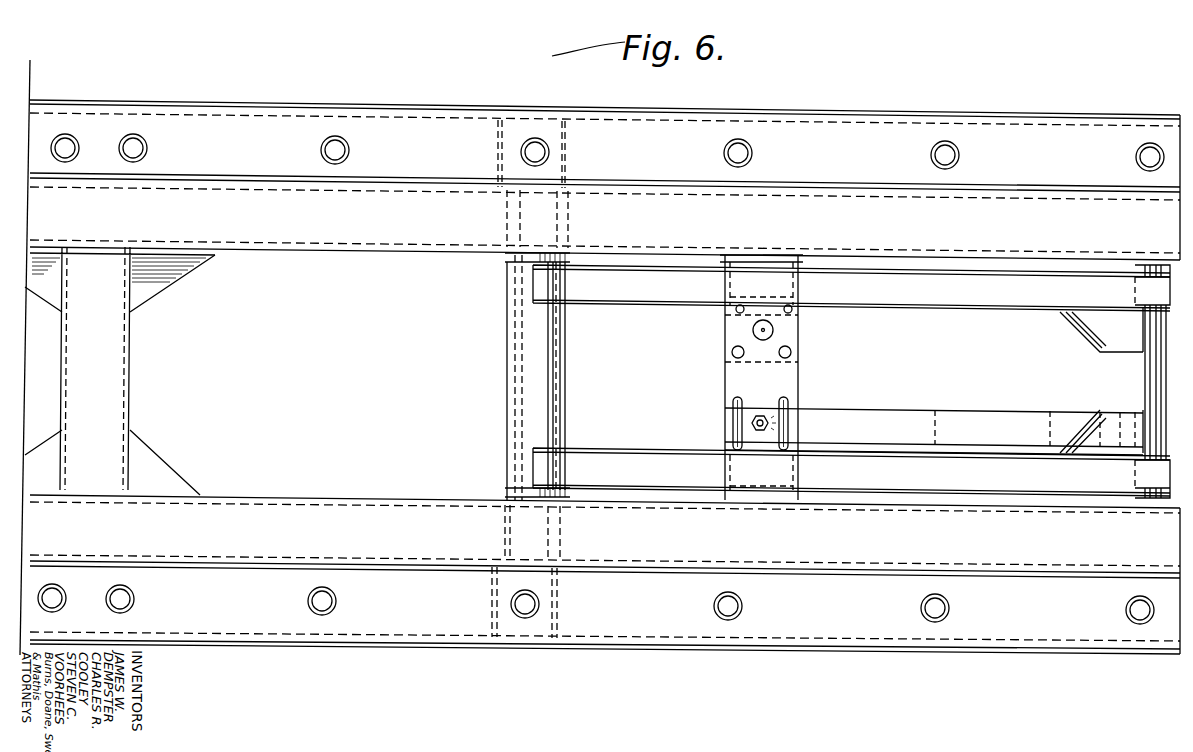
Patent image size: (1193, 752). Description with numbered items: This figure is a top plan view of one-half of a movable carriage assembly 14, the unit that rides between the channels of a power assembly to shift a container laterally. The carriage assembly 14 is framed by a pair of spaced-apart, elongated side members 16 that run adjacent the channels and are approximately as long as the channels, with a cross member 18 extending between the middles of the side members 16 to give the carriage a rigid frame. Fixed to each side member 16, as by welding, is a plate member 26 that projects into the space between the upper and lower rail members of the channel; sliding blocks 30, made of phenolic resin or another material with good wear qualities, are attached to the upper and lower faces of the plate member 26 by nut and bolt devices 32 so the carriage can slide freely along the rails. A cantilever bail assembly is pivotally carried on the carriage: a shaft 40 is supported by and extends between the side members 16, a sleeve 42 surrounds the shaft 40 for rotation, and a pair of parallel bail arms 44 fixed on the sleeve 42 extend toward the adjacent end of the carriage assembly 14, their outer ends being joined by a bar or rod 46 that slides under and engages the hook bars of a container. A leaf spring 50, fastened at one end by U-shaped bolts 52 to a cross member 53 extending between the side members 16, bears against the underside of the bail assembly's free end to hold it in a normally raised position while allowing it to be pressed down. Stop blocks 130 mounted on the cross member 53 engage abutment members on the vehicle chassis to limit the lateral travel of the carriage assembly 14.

The carriage assembly 14 is at (267, 462).
The side members 16 is at (383, 238).
The cross member 18 is at (117, 388).
The plate member 26 is at (424, 120).
The sliding blocks 30 is at (217, 122).
The nut and bolt devices 32 is at (336, 136).
The shaft 40 is at (523, 364).
The sleeve 42 is at (507, 405).
The bail arms 44 is at (628, 428).
The bar or rod 46 is at (1148, 383).
The leaf spring 50 is at (885, 408).
The U-shaped bolts 52 is at (735, 421).
The cross member 53 is at (727, 368).
The stop blocks 130 is at (740, 333).